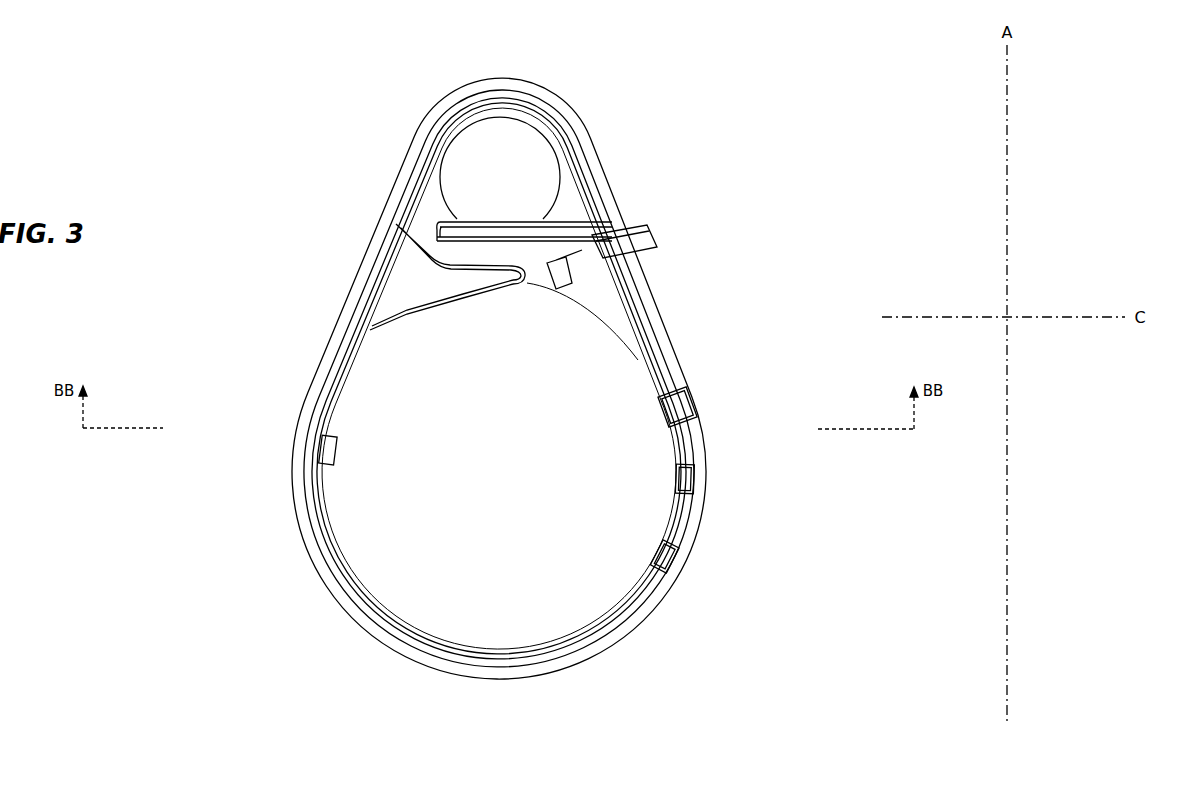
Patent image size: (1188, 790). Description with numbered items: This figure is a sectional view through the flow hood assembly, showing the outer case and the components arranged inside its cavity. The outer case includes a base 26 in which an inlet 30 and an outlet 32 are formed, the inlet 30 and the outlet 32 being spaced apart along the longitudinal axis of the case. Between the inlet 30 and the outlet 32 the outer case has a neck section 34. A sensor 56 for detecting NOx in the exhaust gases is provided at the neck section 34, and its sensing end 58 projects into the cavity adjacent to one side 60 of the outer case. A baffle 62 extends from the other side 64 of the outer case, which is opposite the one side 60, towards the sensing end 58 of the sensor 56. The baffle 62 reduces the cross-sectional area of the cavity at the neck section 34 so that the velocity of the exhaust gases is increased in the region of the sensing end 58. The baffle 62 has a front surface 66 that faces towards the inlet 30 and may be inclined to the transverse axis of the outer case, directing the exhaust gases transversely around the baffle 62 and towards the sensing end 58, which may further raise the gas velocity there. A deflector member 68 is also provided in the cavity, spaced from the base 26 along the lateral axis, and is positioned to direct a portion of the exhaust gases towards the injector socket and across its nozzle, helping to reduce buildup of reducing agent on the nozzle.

The base 26 is at (587, 297).
The inlet 30 is at (481, 468).
The outlet 32 is at (486, 188).
The neck section 34 is at (623, 279).
The sensor 56 is at (563, 273).
The sensing end 58 is at (549, 289).
The one side 60 is at (638, 346).
The baffle 62 is at (405, 305).
The other side 64 is at (355, 344).
The front surface 66 is at (461, 303).
The deflector member 68 is at (545, 237).